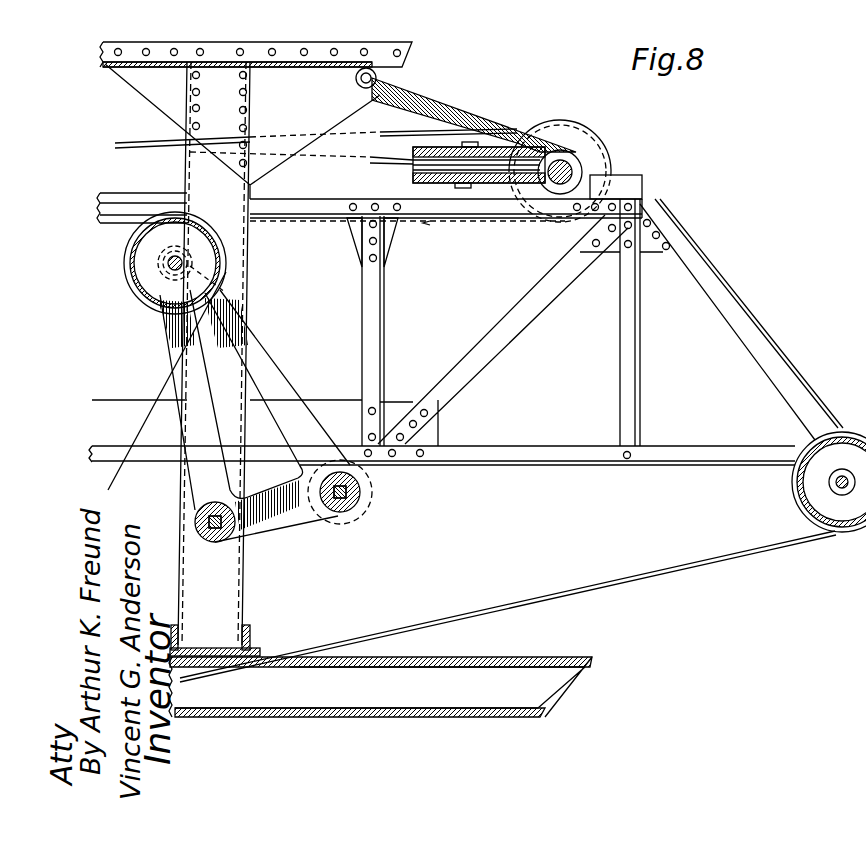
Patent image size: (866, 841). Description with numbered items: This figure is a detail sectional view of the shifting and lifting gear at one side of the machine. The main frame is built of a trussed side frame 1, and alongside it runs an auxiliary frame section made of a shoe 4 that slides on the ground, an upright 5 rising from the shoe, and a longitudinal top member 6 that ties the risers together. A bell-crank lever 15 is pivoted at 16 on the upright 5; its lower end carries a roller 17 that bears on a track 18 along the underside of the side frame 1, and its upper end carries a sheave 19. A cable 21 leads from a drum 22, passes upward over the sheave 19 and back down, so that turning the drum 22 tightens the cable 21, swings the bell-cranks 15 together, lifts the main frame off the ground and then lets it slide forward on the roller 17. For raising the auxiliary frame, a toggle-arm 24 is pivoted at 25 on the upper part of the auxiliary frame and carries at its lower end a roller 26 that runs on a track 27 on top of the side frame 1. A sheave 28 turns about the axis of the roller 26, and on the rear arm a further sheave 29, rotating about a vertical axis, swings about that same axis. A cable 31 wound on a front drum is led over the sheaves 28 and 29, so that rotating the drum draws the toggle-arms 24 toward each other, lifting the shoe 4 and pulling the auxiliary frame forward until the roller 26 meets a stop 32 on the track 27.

The side frame 1 is at (733, 300).
The shoe 4 is at (494, 668).
The upright 5 is at (250, 578).
The longitudinal top member 6 is at (278, 46).
The bell-crank lever 15 is at (256, 358).
The pivot 16 is at (215, 543).
The roller 17 is at (372, 500).
The track 18 is at (535, 463).
The sheave 19 is at (228, 268).
The cable 21 is at (713, 556).
The drum 22 is at (838, 510).
The toggle-arm 24 is at (474, 112).
The pivot 25 is at (378, 66).
The roller 26 is at (585, 170).
The track 27 is at (498, 201).
The sheave 28 is at (605, 140).
The sheave 29 is at (488, 148).
The cable 31 is at (310, 150).
The stop 32 is at (646, 186).